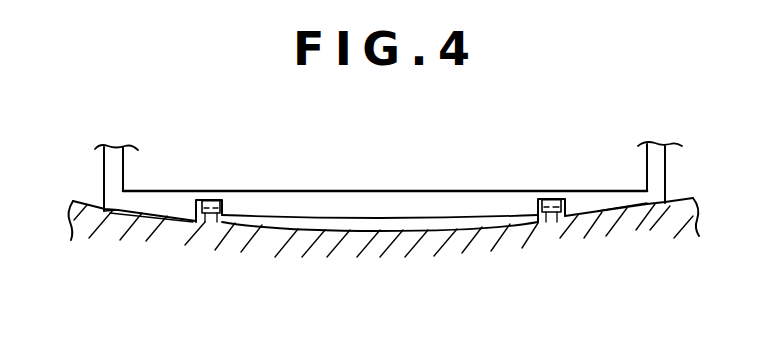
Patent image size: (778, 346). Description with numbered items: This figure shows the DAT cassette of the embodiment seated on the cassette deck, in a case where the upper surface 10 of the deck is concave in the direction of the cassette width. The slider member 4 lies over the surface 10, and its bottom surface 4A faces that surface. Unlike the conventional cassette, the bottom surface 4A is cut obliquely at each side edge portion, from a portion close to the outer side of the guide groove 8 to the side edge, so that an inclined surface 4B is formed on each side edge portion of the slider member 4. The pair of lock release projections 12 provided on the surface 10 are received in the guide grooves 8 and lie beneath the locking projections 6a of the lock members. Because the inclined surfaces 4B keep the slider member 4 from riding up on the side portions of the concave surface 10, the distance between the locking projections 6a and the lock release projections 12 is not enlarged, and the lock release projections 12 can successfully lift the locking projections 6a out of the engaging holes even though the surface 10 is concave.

The slider member 4 is at (112, 165).
The bottom surface of the slider member 4A is at (420, 220).
The inclined surface 4B is at (131, 215).
The locking projection 6a is at (208, 200).
The guide groove 8 is at (223, 203).
The upper surface of the cassette deck 10 is at (360, 231).
The lock release projection 12 is at (208, 222).